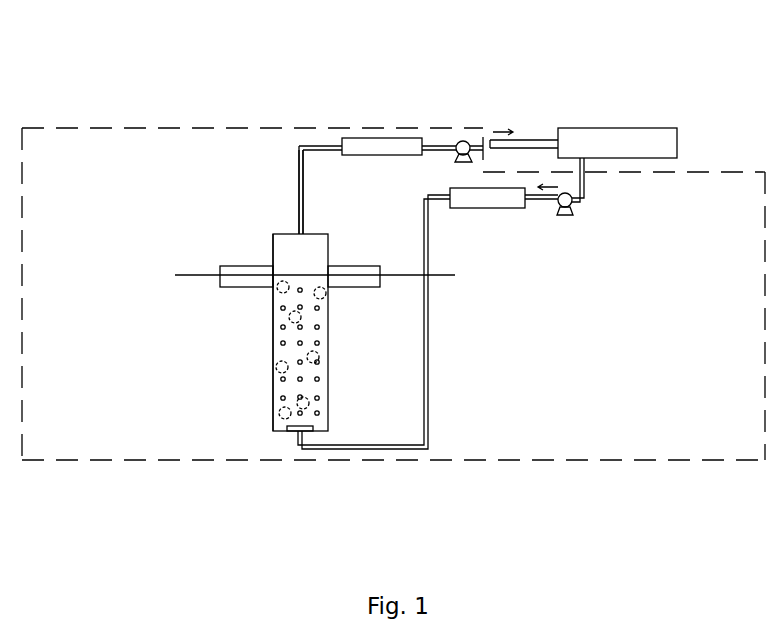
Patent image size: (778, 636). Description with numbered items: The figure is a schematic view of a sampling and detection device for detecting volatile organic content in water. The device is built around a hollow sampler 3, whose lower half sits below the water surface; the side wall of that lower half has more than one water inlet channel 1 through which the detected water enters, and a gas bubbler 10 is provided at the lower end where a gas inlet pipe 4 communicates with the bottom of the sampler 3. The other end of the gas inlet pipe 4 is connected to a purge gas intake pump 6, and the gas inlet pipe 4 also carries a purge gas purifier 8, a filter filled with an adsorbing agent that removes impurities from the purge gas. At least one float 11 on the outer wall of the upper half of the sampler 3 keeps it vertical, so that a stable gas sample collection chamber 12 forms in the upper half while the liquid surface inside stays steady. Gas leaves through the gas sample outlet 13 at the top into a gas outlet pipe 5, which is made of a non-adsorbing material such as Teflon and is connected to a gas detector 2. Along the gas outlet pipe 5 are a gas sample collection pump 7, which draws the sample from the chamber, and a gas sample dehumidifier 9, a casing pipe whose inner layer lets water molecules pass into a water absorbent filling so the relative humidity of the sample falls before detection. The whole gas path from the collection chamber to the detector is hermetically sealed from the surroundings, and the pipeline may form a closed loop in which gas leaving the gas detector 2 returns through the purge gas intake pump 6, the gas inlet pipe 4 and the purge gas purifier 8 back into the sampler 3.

The water inlet channel 1 is at (285, 378).
The gas detector 2 is at (607, 128).
The sampler 3 is at (273, 377).
The gas inlet pipe 4 is at (362, 448).
The gas outlet pipe 5 is at (300, 145).
The purge gas intake pump 6 is at (565, 215).
The gas sample collection pump 7 is at (460, 142).
The purge gas purifier 8 is at (487, 208).
The gas sample dehumidifier 9 is at (375, 138).
The gas bubbler 10 is at (298, 431).
The float 11 is at (240, 275).
The gas sample collection chamber 12 is at (283, 257).
The gas sample outlet 13 is at (298, 233).